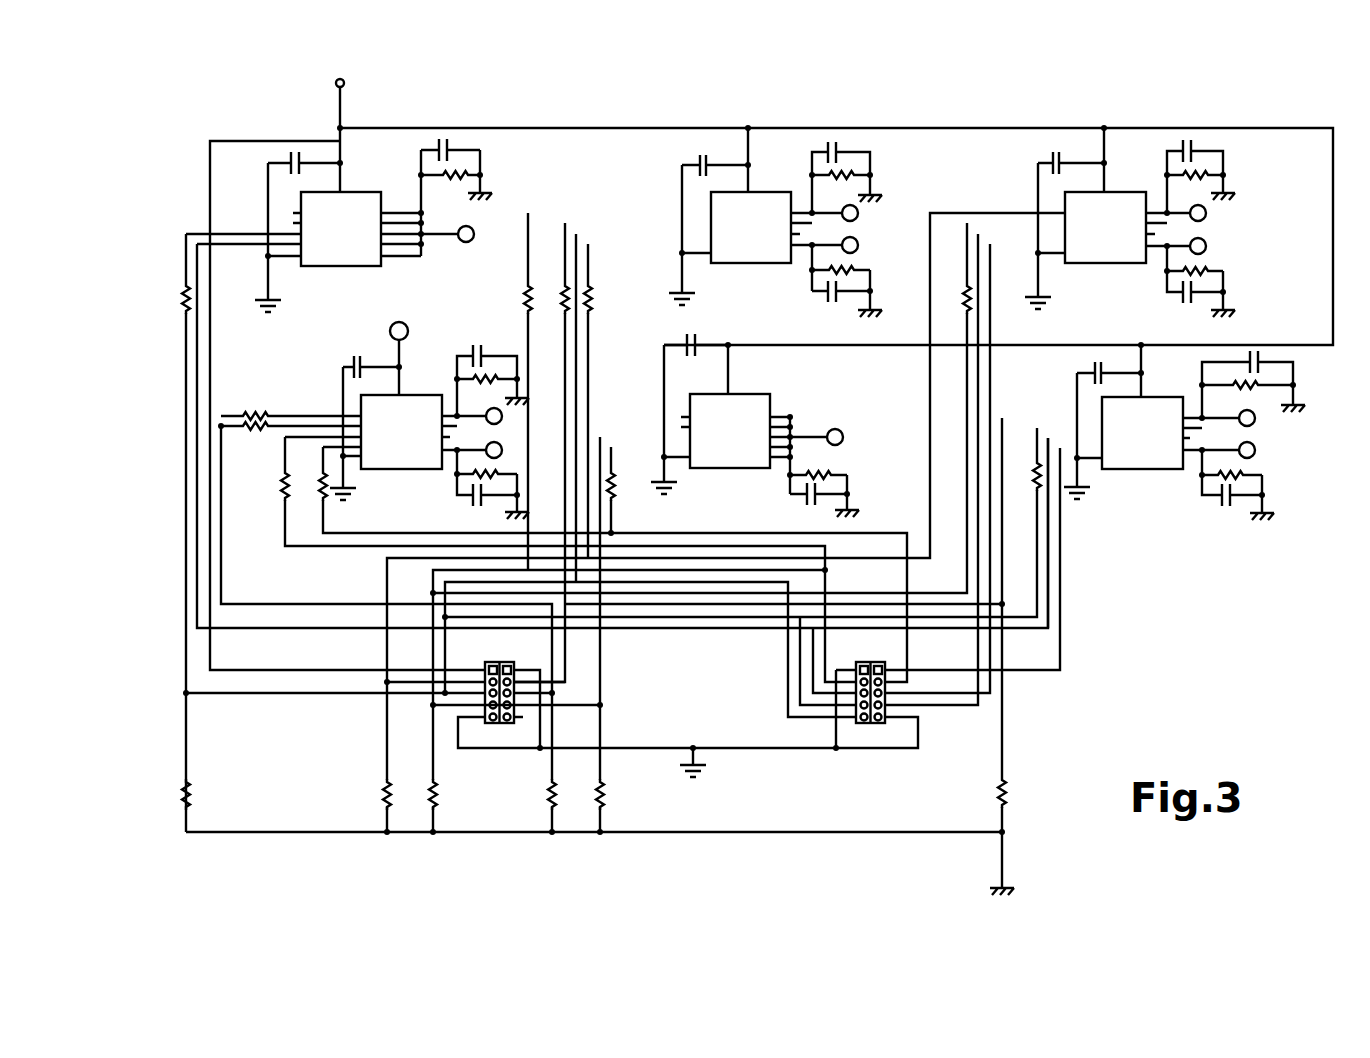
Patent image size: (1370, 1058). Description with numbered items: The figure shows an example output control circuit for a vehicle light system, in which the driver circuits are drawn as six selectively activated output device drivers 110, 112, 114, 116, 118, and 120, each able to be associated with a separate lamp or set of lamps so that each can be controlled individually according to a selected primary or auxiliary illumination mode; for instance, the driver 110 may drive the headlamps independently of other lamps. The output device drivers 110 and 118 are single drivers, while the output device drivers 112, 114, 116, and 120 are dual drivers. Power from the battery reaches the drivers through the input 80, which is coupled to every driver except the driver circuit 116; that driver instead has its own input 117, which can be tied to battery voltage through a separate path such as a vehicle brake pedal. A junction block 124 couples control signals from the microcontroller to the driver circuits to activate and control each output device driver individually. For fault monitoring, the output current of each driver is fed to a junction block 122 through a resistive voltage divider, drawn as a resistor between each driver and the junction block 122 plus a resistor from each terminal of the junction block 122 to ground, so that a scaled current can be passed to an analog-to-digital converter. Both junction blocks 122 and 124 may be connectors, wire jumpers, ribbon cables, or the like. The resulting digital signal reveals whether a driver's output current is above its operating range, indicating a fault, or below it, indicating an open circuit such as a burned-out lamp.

The input 80 is at (343, 102).
The output device driver 110 is at (352, 215).
The output device driver 112 is at (754, 218).
The output device driver 114 is at (1117, 218).
The output device driver 116 is at (386, 412).
The input 117 is at (402, 322).
The output device driver 118 is at (750, 414).
The output device driver 120 is at (1137, 448).
The junction block 122 is at (507, 724).
The junction block 124 is at (875, 724).